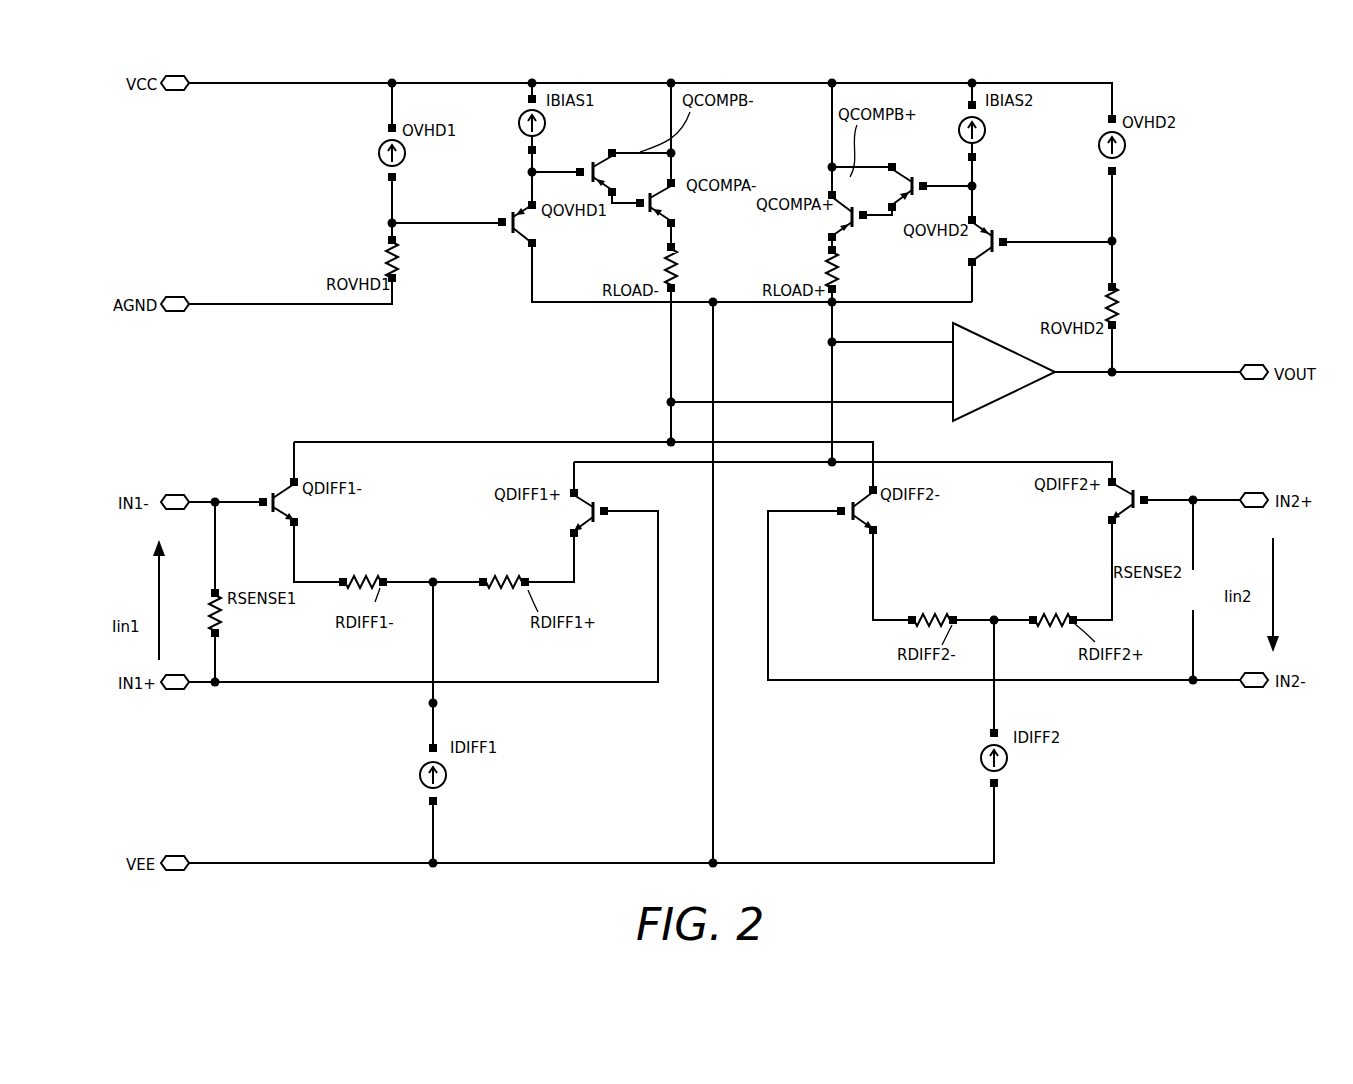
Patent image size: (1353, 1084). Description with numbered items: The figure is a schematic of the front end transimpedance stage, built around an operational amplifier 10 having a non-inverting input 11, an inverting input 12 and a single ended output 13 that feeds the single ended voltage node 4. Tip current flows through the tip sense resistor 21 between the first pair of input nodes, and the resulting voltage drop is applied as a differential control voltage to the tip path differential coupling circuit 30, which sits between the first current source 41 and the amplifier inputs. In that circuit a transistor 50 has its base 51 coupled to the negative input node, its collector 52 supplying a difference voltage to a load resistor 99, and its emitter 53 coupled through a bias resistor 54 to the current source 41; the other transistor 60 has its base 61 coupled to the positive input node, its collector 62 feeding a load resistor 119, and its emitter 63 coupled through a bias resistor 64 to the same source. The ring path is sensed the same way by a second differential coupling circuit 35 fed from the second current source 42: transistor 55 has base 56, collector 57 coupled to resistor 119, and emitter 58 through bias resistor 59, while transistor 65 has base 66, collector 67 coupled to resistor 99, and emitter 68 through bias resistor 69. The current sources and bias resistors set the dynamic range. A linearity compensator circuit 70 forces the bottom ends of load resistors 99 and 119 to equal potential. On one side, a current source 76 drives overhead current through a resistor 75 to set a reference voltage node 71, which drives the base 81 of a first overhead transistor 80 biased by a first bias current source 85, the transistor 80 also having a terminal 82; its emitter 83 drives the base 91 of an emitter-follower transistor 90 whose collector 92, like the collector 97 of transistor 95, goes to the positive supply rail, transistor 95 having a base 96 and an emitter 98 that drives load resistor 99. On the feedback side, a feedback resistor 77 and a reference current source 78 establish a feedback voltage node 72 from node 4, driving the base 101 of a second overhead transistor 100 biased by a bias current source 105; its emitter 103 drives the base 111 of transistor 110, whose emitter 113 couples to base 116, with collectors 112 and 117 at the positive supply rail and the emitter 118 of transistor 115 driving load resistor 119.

The single ended voltage node 4 is at (1252, 360).
The operational amplifier 10 is at (975, 333).
The non-inverting input 11 is at (951, 406).
The inverting input 12 is at (950, 338).
The single ended output 13 is at (1062, 375).
The tip sense resistor 21 is at (222, 615).
The tip path differential coupling circuit 30 is at (438, 514).
The ring path differential coupling circuit 35 is at (1001, 534).
The first current source 41 is at (446, 773).
The second current source 42 is at (979, 760).
The transistor 50 is at (298, 510).
The base 51 is at (263, 500).
The collector 52 is at (298, 480).
The emitter 53 is at (298, 526).
The bias resistor 54 is at (368, 576).
The transistor 55 is at (876, 512).
The base 56 is at (841, 516).
The collector 57 is at (867, 490).
The emitter 58 is at (877, 532).
The bias resistor 59 is at (932, 613).
The transistor 60 is at (574, 520).
The base 61 is at (608, 509).
The collector 62 is at (578, 492).
The emitter 63 is at (578, 536).
The bias resistor 64 is at (502, 589).
The transistor 65 is at (1121, 504).
The base 66 is at (1148, 498).
The collector 67 is at (1116, 481).
The emitter 68 is at (1116, 522).
The bias resistor 69 is at (1052, 627).
The linearity compensator circuit 70 is at (768, 151).
The reference voltage node 71 is at (392, 223).
The feedback voltage node 72 is at (1112, 241).
The resistor 75 is at (400, 258).
The current source 76 is at (406, 153).
The feedback resistor 77 is at (1120, 302).
The reference current source 78 is at (1126, 148).
The first overhead transistor 80 is at (535, 232).
The base 81 is at (500, 220).
The emitter of QOVHD1 82 is at (536, 247).
The emitter 83 is at (536, 205).
The first bias current source 85 is at (519, 124).
The emitter-follower NPN transistor 90 is at (600, 178).
The base 91 is at (580, 170).
The collector 92 is at (612, 149).
The compensator transistor 95 is at (676, 208).
The base of QCOMPA- 96 is at (640, 207).
The collector 97 is at (675, 183).
The emitter 98 is at (675, 223).
The load resistor 99 is at (679, 262).
The second overhead transistor 100 is at (968, 254).
The base 101 is at (1007, 240).
The emitter 103 is at (976, 220).
The bias current source 105 is at (986, 128).
The emitter-follower NPN transistor 110 is at (903, 188).
The base 111 is at (923, 182).
The collector 112 is at (892, 163).
The emitter 113 is at (896, 207).
The emitter-follower transistor 115 is at (830, 220).
The base 116 is at (870, 222).
The collector 117 is at (829, 194).
The emitter 118 is at (836, 240).
The load resistor 119 is at (840, 268).